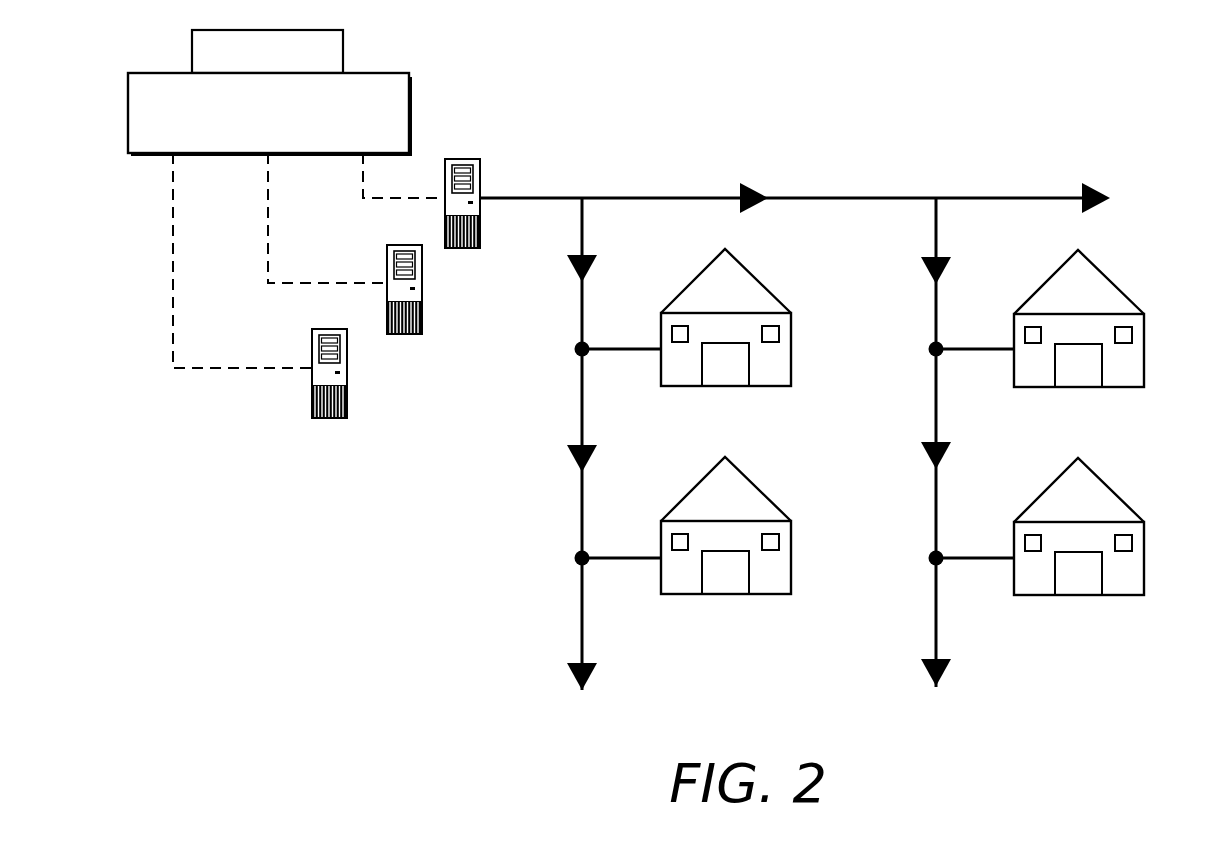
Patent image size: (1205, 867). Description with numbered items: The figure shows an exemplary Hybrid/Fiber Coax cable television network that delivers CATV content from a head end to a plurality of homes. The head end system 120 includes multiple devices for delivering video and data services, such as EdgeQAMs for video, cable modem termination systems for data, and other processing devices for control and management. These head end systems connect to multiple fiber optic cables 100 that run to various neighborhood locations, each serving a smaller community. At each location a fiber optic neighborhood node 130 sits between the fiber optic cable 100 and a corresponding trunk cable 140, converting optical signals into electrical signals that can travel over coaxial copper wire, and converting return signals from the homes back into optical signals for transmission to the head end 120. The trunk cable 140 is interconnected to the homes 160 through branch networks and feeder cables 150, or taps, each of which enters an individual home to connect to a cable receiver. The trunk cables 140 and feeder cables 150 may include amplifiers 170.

The fiber optic cable 100 is at (363, 174).
The head end system 120 is at (128, 113).
The fiber optic neighborhood node 130 is at (463, 159).
The trunk cable 140 is at (541, 197).
The feeder cable 150 is at (622, 351).
The home 160 is at (1112, 280).
The amplifier 170 is at (755, 187).